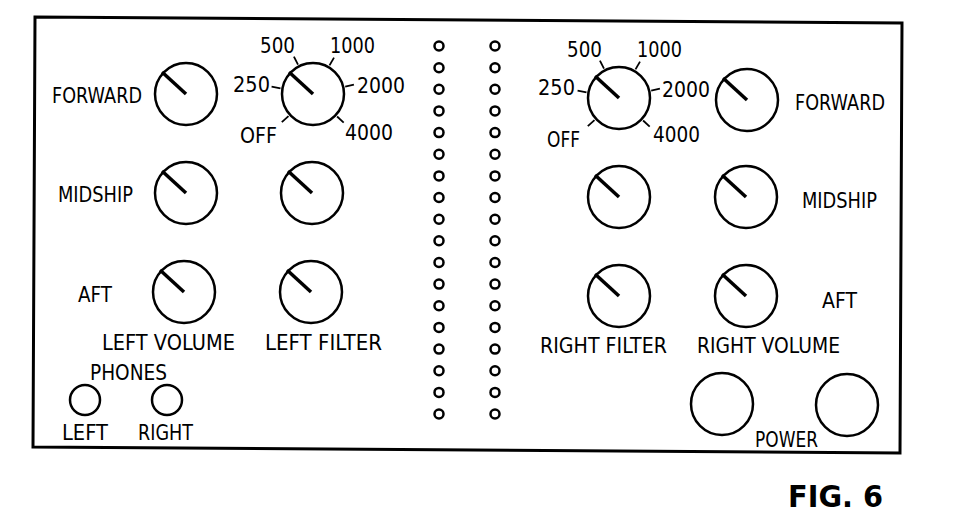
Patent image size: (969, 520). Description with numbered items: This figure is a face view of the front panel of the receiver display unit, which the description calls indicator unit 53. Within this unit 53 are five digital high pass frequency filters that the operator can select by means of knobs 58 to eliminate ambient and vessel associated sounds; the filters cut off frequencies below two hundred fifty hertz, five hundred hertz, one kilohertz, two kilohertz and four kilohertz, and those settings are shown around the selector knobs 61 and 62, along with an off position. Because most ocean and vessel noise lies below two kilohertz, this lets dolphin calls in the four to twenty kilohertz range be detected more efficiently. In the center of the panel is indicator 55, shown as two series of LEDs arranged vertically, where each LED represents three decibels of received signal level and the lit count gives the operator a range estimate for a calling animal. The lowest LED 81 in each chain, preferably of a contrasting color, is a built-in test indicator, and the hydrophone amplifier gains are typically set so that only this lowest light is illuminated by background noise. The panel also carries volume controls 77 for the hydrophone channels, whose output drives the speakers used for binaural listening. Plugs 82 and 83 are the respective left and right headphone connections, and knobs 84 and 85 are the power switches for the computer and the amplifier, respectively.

The indicator unit 53 is at (301, 433).
The indicator 55 is at (476, 418).
The knobs 58 is at (322, 226).
The knob 61 is at (619, 131).
The knob 62 is at (313, 127).
The volume controls 77 is at (182, 63).
The lowest LED 81 is at (433, 414).
The plug 82 is at (72, 395).
The plug 83 is at (182, 398).
The knob 84 is at (692, 424).
The knob 85 is at (821, 383).